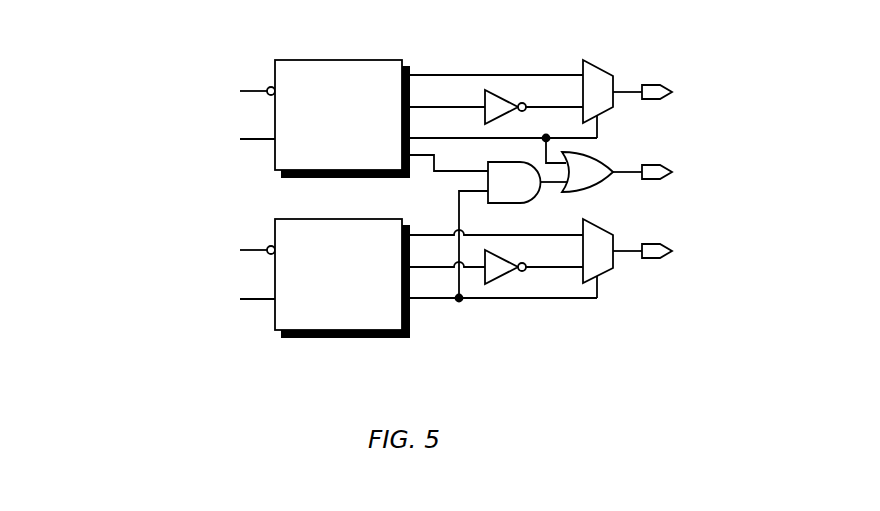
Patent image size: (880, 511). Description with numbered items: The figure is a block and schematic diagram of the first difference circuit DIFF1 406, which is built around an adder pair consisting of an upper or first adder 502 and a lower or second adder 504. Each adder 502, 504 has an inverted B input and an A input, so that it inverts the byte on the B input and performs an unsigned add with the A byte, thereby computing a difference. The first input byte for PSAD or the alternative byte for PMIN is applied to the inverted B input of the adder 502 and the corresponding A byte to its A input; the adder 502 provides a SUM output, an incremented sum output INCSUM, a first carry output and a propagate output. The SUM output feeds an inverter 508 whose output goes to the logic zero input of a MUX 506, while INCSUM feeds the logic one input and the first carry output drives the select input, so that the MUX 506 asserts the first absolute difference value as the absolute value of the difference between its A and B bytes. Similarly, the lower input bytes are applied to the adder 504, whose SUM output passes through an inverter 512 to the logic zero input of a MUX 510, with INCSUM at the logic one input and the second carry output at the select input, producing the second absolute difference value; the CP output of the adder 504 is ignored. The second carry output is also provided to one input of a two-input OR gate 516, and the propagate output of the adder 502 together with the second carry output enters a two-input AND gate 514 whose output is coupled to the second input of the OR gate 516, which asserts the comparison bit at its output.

The first difference circuit DIFF1 406 is at (423, 207).
The first adder 502 is at (351, 124).
The second adder 504 is at (351, 284).
The MUX 506 is at (600, 61).
The inverter 508 is at (509, 101).
The MUX 510 is at (600, 220).
The inverter 512 is at (509, 261).
The two-input AND gate 514 is at (524, 188).
The two-input OR gate 516 is at (599, 180).